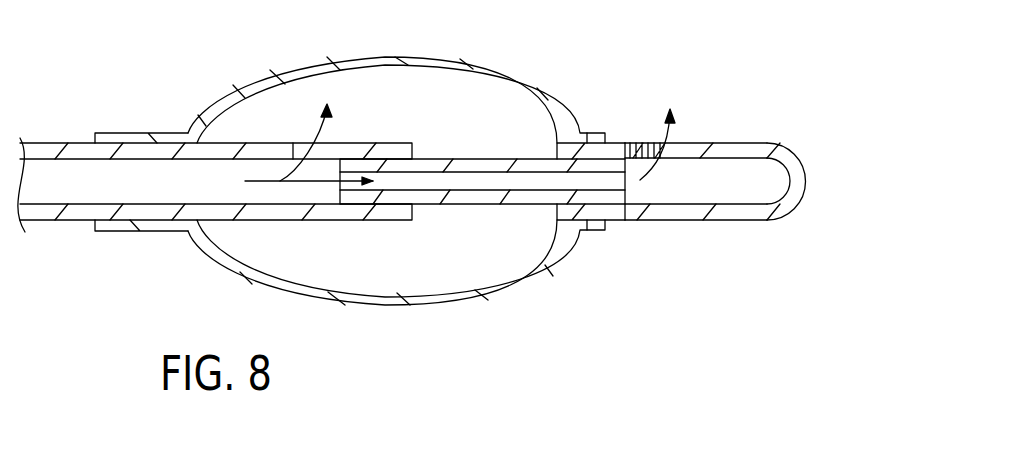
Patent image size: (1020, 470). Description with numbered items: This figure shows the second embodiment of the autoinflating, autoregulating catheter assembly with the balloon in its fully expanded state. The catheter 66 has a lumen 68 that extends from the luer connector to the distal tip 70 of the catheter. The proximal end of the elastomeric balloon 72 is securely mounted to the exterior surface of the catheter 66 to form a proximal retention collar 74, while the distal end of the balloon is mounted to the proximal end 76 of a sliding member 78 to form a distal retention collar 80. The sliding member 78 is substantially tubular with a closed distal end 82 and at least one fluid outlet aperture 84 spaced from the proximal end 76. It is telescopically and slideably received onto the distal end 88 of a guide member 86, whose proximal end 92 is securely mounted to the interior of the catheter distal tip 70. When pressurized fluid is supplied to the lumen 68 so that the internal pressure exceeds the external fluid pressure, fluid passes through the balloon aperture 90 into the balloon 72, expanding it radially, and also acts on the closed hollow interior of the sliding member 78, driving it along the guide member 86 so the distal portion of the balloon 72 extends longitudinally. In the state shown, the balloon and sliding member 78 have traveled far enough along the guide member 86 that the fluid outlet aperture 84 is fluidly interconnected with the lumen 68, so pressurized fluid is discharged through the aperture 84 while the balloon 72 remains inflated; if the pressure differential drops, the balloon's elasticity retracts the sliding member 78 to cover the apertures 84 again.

The catheter 66 is at (40, 143).
The lumen 68 is at (88, 183).
The distal tip 70 is at (390, 147).
The elastomeric balloon 72 is at (483, 295).
The proximal retention collar 74 is at (125, 133).
The proximal end of sliding member 76 is at (596, 152).
The sliding member 78 is at (718, 142).
The distal retention collar 80 is at (591, 231).
The closed distal end 82 is at (804, 193).
The fluid outlet aperture 84 is at (663, 143).
The guide member 86 is at (477, 158).
The distal end of guide member 88 is at (629, 187).
The balloon aperture 90 is at (305, 148).
The proximal end of guide member 92 is at (405, 183).